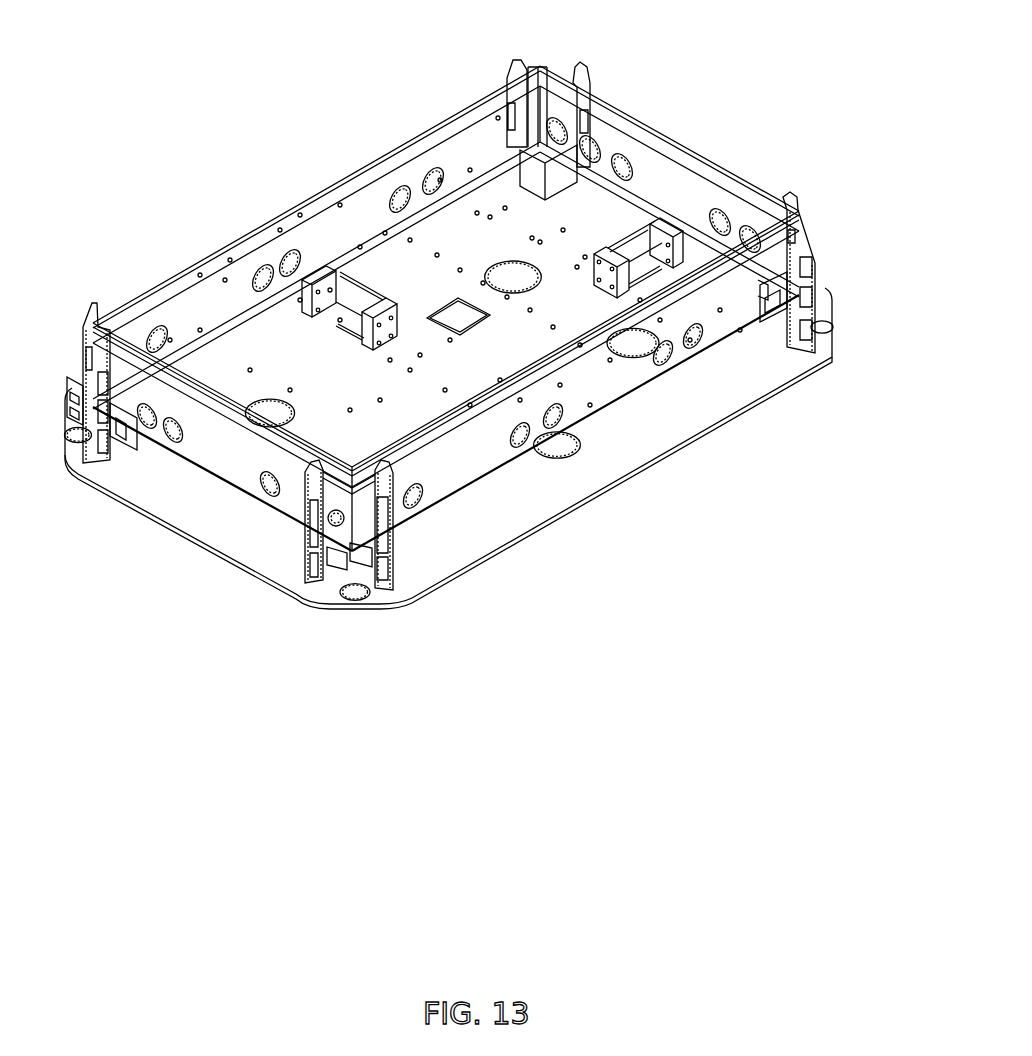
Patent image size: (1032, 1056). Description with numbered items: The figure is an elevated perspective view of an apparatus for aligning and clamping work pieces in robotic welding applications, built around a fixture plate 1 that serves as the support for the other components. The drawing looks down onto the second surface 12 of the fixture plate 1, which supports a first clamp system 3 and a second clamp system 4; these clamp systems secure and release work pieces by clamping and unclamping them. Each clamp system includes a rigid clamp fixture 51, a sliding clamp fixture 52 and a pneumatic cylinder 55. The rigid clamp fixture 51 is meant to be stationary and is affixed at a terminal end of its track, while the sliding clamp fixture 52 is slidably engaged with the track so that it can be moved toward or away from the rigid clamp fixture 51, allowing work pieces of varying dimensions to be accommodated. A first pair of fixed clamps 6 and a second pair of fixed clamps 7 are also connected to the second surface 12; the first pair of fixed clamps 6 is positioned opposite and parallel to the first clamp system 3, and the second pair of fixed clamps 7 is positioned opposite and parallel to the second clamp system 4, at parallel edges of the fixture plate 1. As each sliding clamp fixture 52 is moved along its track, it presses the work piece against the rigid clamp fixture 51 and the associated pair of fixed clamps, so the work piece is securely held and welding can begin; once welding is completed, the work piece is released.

The fixture plate 1 is at (466, 343).
The first clamp system 3 is at (219, 305).
The second clamp system 4 is at (650, 190).
The first pair of fixed clamps 6 is at (803, 245).
The second pair of fixed clamps 7 is at (98, 380).
The second surface 12 is at (703, 414).
The rigid clamp fixture 51 is at (97, 310).
The sliding clamp fixture 52 is at (511, 75).
The pneumatic cylinder 55 is at (628, 247).